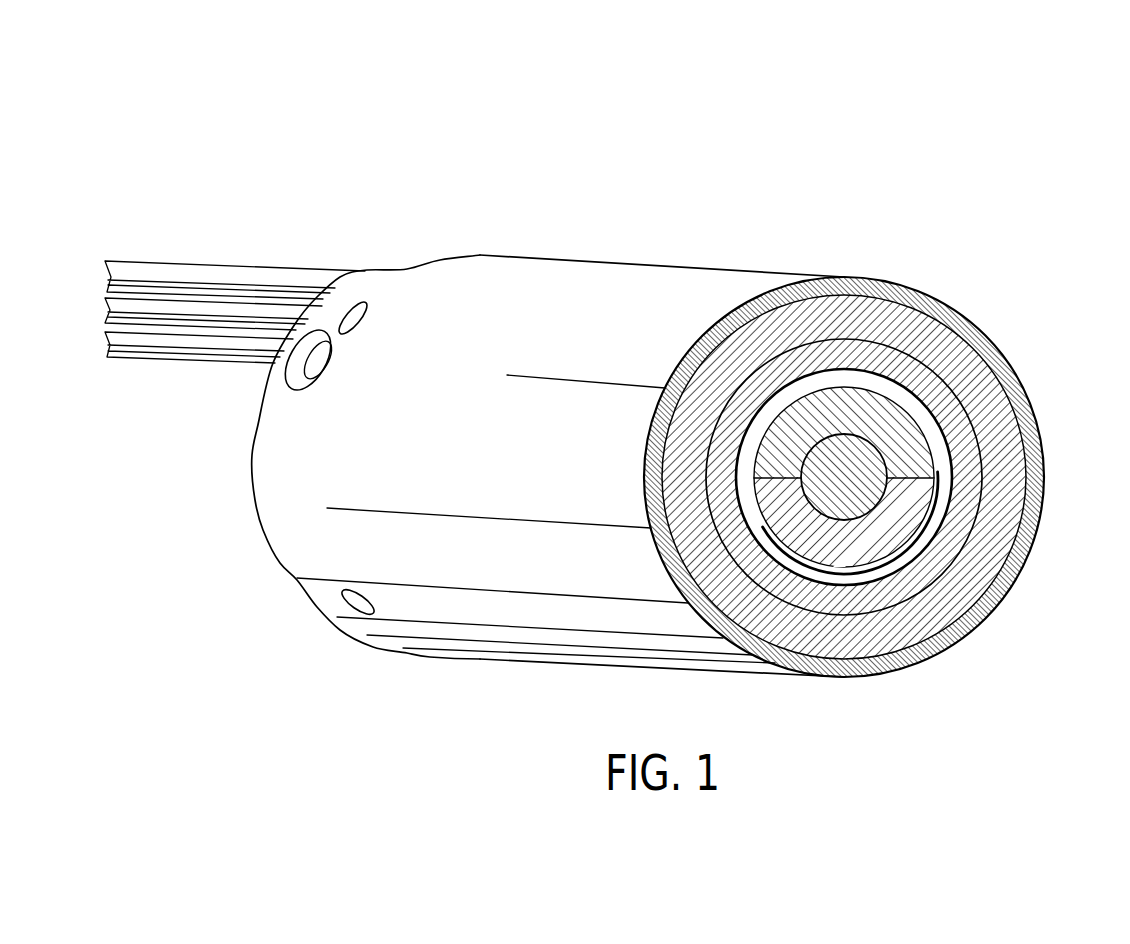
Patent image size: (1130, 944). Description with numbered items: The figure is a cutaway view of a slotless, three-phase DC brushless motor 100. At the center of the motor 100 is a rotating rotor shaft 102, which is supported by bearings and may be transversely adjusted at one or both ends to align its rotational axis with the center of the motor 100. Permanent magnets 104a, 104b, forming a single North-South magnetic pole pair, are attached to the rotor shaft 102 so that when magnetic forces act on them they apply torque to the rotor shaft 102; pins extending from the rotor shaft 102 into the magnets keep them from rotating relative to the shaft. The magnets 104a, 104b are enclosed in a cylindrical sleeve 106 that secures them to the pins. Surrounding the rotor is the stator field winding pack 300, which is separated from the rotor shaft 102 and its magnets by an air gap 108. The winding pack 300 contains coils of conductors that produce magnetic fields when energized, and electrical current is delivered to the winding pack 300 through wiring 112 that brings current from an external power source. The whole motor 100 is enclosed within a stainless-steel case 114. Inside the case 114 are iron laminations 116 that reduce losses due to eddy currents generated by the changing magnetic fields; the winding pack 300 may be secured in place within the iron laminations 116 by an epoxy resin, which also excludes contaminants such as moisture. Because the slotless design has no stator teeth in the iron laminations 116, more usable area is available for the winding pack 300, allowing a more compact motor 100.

The three-phase DC brushless motor 100 is at (602, 383).
The rotor shaft 102 is at (857, 472).
The permanent magnet 104a is at (875, 415).
The permanent magnet 104b is at (805, 527).
The cylindrical sleeve 106 is at (895, 528).
The air gap 108 is at (847, 587).
The wiring 112 is at (215, 266).
The stainless-steel case 114 is at (878, 285).
The iron laminations 116 is at (883, 318).
The stator field winding pack 300 is at (907, 577).